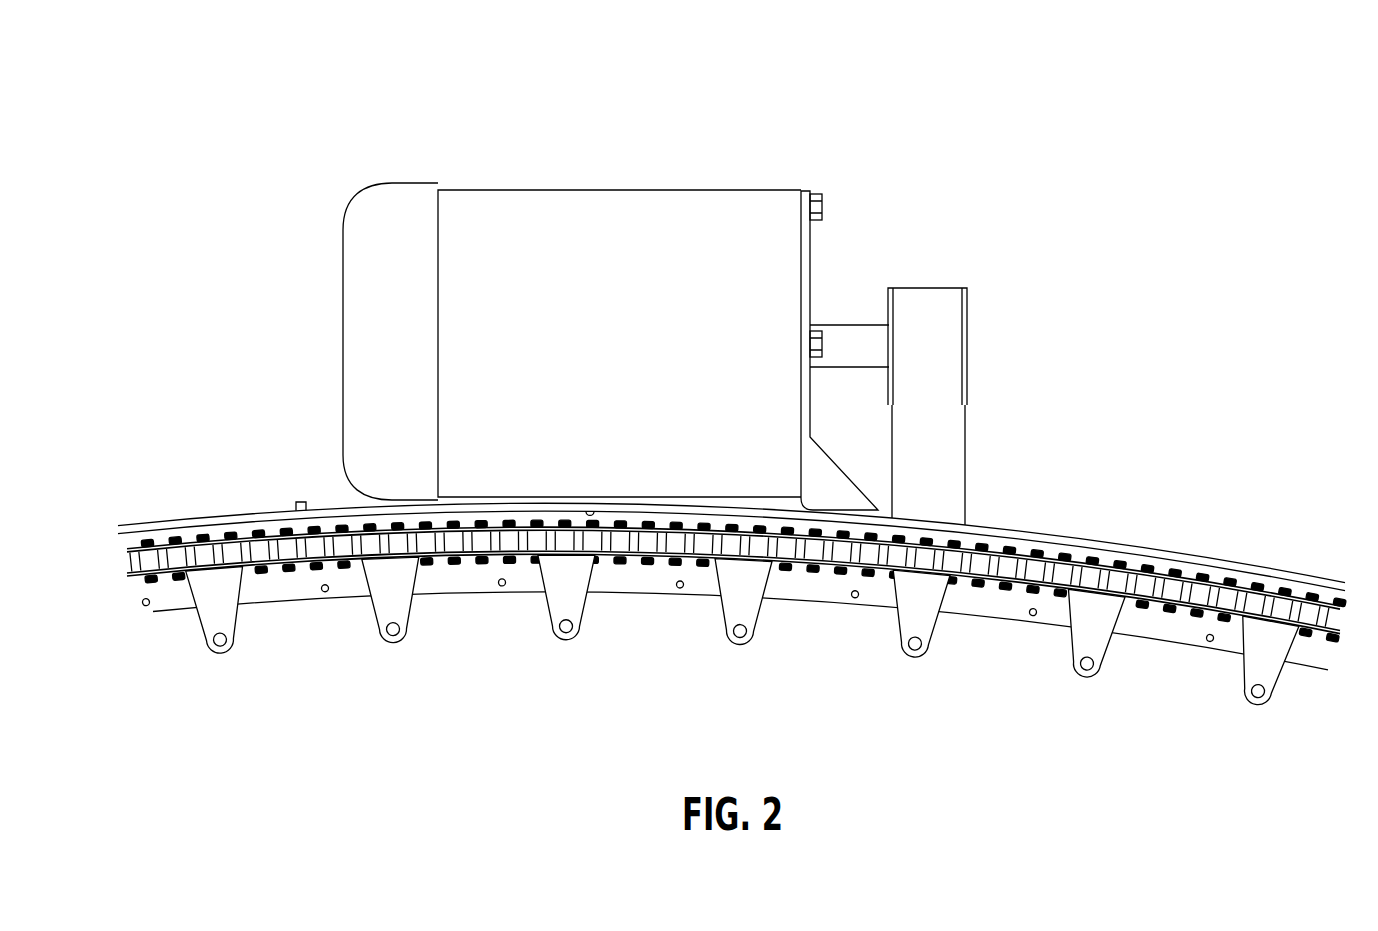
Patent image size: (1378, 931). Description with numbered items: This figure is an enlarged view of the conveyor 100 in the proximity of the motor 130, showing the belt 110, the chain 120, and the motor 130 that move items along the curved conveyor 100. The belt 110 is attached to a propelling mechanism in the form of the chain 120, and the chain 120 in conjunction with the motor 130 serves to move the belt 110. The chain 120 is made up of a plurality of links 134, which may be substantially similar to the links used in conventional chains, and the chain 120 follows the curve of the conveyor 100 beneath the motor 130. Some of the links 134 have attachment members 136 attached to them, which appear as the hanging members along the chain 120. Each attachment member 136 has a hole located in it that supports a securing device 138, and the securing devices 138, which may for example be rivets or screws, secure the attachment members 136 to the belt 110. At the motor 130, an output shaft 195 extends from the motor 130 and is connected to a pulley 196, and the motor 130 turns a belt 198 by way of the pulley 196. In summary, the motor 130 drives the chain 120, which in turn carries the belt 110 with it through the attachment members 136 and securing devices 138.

The conveyor 100 is at (1235, 140).
The belt 110 is at (1128, 628).
The chain 120 is at (739, 591).
The motor 130 is at (753, 182).
The links 134 is at (1272, 592).
The attachment members 136 is at (895, 618).
The securing devices 138 is at (913, 655).
The output shaft 195 is at (843, 322).
The pulley 196 is at (966, 333).
The belt 198 is at (966, 464).